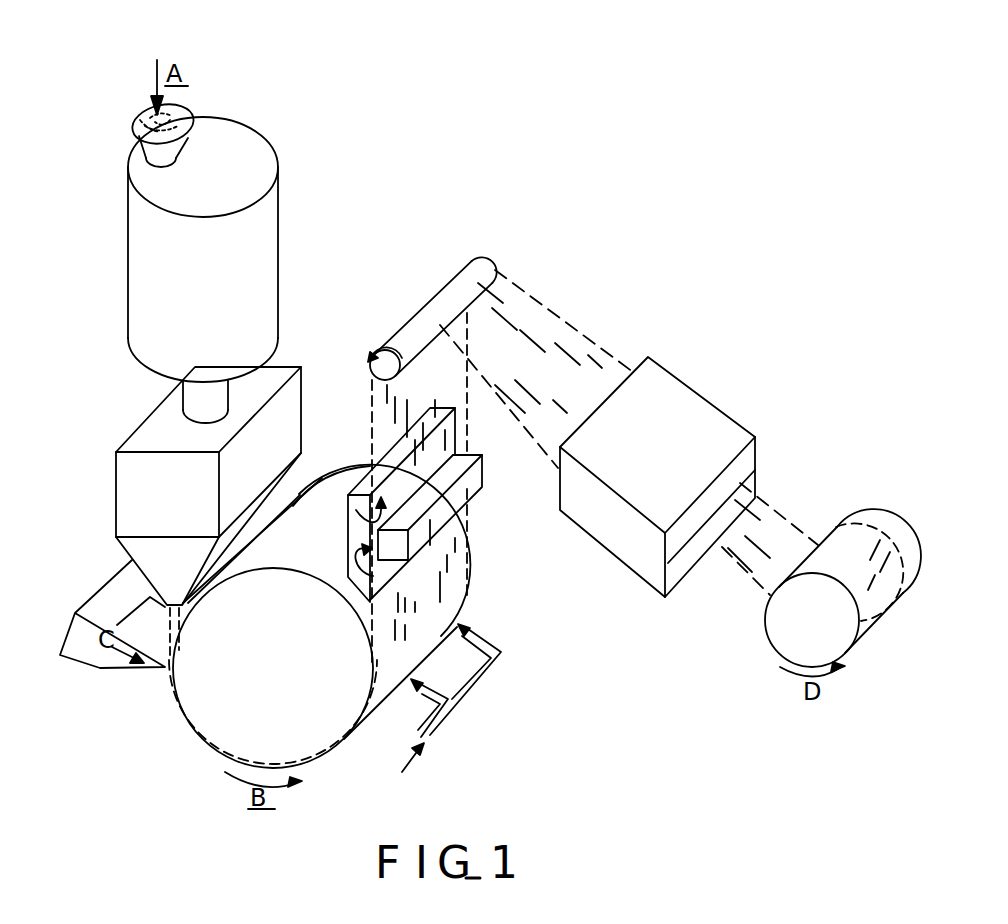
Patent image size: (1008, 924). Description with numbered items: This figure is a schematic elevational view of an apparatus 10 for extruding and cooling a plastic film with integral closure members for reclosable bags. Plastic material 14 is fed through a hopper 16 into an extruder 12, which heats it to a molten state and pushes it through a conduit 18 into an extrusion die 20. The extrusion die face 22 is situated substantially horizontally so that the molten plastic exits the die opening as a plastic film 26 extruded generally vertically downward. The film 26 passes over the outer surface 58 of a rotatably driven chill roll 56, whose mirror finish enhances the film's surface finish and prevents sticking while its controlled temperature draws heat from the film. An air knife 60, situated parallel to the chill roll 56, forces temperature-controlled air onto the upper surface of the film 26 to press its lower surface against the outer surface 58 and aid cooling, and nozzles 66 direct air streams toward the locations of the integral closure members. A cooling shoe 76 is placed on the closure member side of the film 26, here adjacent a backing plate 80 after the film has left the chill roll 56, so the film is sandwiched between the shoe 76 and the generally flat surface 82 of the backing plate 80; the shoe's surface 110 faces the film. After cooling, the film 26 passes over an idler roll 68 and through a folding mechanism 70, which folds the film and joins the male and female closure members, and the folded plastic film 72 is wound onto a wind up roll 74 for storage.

The apparatus 10 is at (508, 232).
The extruder 12 is at (258, 248).
The plastic material 14 is at (176, 110).
The hopper 16 is at (150, 148).
The conduit 18 is at (193, 403).
The extrusion die 20 is at (138, 500).
The extrusion die face 22 is at (166, 606).
The plastic film 26 is at (529, 326).
The chill roll 56 is at (217, 728).
The outer surface 58 is at (337, 478).
The air knife 60 is at (87, 652).
The nozzles 66 is at (484, 639).
The idler roll 68 is at (379, 352).
The folding mechanism 70 is at (692, 410).
The folded plastic film 72 is at (770, 520).
The wind up roll 74 is at (790, 623).
The cooling shoe 76 is at (458, 475).
The backing plate 80 is at (356, 510).
The flat surface 82 is at (356, 536).
The surface 110 is at (358, 577).